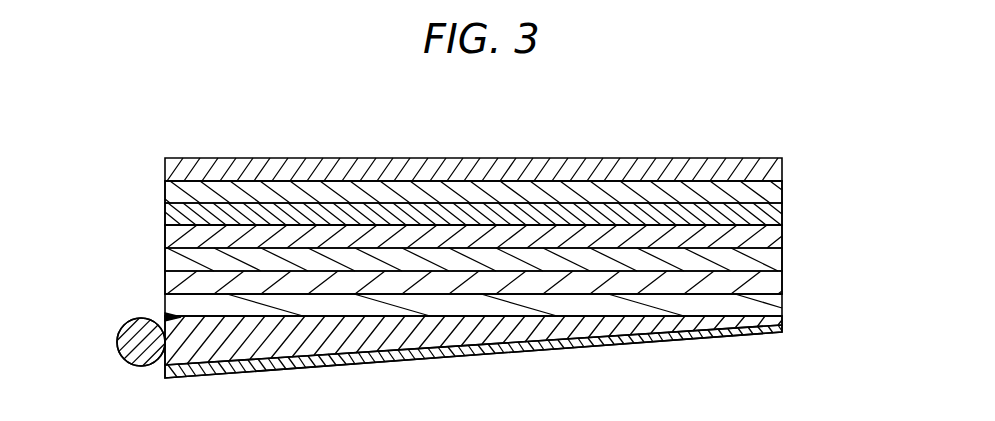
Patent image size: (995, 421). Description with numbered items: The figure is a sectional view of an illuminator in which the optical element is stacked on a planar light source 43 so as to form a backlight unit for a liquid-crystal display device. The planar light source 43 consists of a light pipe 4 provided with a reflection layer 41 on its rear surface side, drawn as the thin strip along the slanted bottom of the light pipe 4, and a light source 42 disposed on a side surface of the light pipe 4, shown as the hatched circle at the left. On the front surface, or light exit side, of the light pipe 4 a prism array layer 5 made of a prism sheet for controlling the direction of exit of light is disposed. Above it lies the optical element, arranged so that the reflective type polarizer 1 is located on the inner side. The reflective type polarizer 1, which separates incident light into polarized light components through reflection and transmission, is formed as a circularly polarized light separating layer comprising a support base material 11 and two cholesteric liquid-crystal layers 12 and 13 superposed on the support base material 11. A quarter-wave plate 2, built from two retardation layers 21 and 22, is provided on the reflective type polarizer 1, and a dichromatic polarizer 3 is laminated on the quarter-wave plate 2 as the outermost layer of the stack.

The reflective type polarizer 1 is at (861, 228).
The support base material 11 is at (785, 281).
The cholesteric liquid-crystal layer 12 is at (785, 259).
The cholesteric liquid-crystal layer 13 is at (785, 236).
The quarter-wave plate 2 is at (861, 174).
The retardation layer 21 is at (785, 212).
The retardation layer 22 is at (785, 187).
The dichromatic polarizer 3 is at (785, 167).
The light pipe 4 is at (165, 316).
The reflection layer 41 is at (583, 340).
The light source 42 is at (127, 329).
The planar light source 43 is at (70, 245).
The prism array layer 5 is at (785, 304).